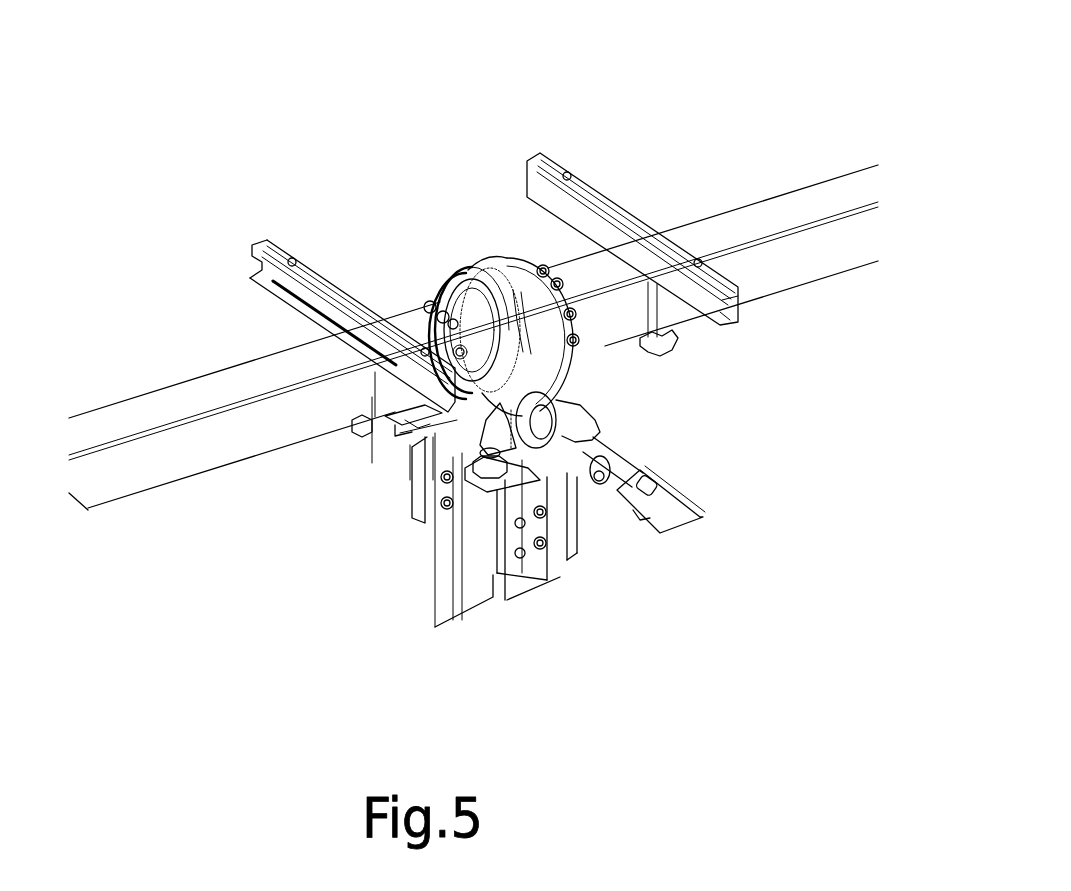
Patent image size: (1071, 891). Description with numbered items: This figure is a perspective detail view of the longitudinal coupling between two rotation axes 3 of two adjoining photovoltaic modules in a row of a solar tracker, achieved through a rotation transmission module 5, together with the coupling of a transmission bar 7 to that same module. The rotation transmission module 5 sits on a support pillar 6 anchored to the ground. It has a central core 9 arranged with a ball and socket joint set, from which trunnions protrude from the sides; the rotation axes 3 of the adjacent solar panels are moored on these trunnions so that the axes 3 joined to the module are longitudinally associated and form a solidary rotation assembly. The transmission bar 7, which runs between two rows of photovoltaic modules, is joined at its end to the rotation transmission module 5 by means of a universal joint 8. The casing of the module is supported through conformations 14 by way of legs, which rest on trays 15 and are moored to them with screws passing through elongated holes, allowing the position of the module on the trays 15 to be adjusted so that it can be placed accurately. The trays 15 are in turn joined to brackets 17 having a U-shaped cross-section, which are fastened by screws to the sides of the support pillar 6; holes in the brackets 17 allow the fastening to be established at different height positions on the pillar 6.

The rotation axis 3 is at (207, 392).
The rotation transmission module 5 is at (497, 258).
The support pillar 6 is at (447, 588).
The transmission bar 7 is at (667, 505).
The universal joint 8 is at (622, 441).
The central core 9 is at (427, 260).
The conformation by way of leg 14 is at (497, 424).
The tray 15 is at (535, 477).
The bracket 17 is at (417, 452).